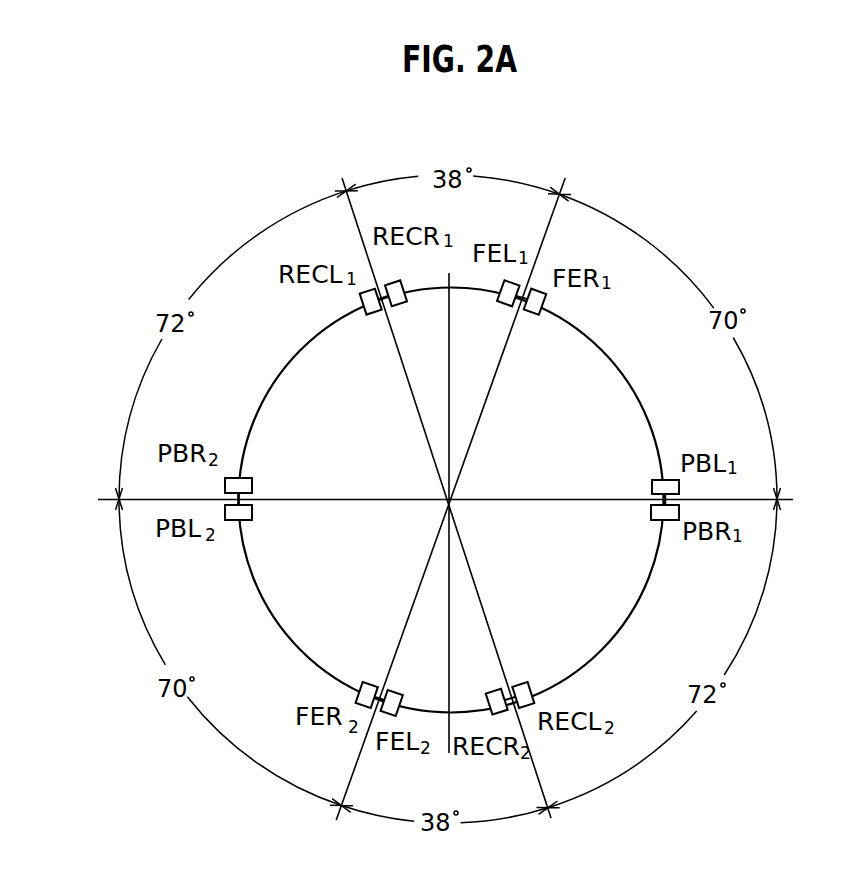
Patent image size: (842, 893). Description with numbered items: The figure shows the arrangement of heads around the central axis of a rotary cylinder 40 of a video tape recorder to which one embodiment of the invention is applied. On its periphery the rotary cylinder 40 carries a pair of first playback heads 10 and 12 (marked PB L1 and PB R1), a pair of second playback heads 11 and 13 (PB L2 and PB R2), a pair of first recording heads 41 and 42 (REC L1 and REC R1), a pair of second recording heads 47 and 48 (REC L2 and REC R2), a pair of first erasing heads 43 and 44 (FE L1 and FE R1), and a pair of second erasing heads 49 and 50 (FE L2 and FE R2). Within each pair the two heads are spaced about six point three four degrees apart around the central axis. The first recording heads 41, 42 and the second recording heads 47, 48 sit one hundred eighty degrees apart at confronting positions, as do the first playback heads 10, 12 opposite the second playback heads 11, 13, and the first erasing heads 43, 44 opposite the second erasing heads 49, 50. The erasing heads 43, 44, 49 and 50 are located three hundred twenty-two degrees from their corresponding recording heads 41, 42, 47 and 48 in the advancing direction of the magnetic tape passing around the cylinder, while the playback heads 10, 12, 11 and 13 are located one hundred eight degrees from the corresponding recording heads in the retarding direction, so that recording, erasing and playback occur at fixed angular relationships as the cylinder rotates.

The first playback head 10 is at (652, 485).
The second playback head 11 is at (252, 511).
The first playback head 12 is at (655, 512).
The second playback head 13 is at (247, 482).
The rotary cylinder 40 is at (616, 361).
The first recording head 41 is at (370, 314).
The first recording head 42 is at (404, 306).
The first erasing head 43 is at (503, 306).
The first erasing head 44 is at (534, 314).
The second recording head 47 is at (521, 682).
The second recording head 48 is at (491, 690).
The second erasing head 49 is at (393, 688).
The second erasing head 50 is at (363, 683).